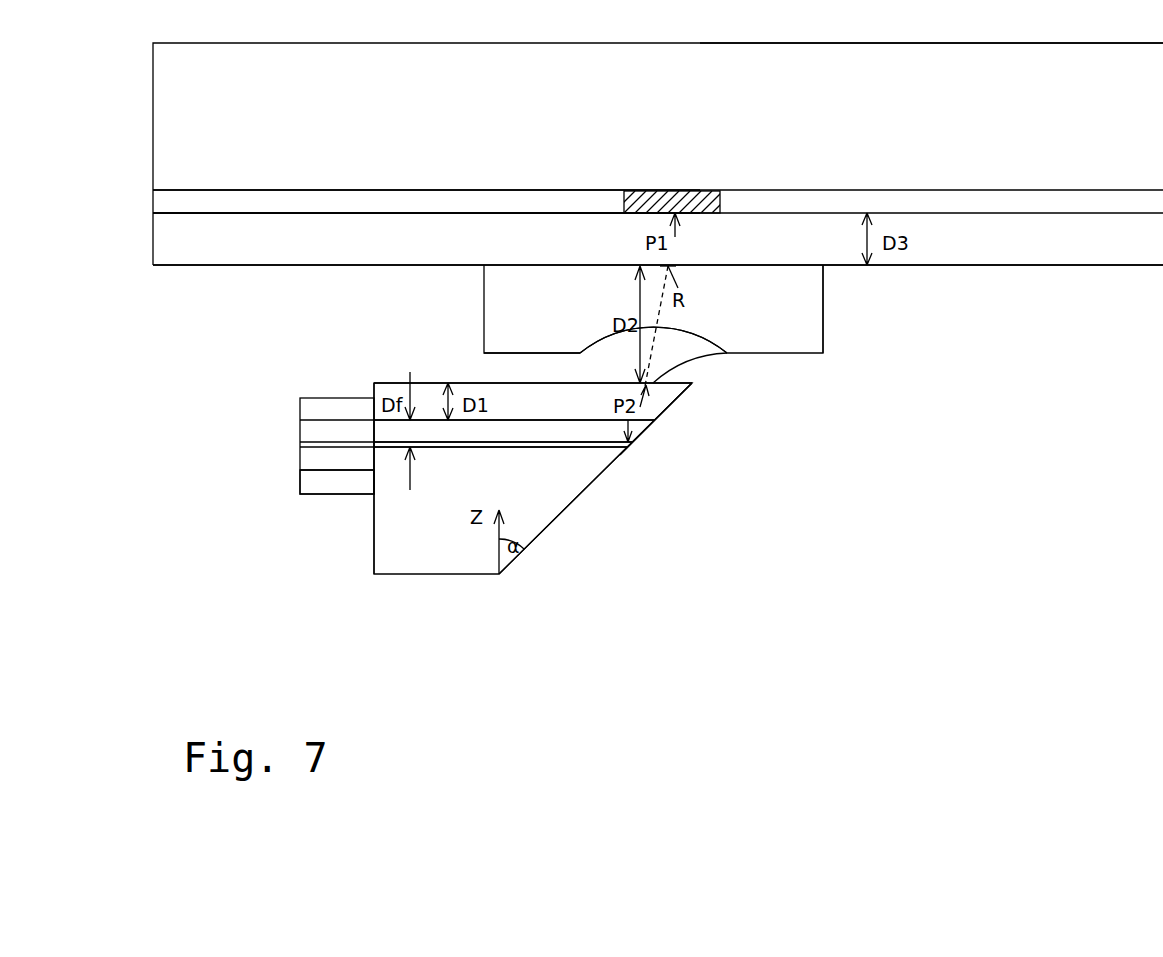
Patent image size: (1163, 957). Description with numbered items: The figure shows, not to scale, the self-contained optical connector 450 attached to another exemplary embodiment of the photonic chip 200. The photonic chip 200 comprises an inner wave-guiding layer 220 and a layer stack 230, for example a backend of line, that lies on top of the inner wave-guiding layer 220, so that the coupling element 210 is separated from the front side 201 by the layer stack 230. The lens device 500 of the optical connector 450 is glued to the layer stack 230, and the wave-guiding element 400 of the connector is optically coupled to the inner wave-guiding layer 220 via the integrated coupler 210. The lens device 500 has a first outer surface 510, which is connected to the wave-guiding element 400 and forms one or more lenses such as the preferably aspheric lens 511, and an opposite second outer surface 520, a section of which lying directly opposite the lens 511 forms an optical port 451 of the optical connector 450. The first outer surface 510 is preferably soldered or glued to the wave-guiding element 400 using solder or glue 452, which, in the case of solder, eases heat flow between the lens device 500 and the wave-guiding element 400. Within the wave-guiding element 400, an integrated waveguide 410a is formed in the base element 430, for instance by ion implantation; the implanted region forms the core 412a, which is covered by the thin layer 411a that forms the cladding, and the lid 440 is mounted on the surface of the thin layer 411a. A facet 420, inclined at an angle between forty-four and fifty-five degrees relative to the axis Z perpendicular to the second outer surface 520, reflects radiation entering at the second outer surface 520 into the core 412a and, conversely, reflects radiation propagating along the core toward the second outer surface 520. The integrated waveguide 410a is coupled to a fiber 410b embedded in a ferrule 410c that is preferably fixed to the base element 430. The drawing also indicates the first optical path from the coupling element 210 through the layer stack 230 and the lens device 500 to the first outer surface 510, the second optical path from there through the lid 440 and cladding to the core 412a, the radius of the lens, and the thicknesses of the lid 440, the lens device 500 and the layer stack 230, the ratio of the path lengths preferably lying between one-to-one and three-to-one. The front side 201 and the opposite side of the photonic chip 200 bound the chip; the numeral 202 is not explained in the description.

The photonic chip 200 is at (1110, 250).
The front side 201 is at (1023, 266).
The upper surface of display panel 202 is at (795, 43).
The coupling element 210 is at (705, 205).
The inner wave-guiding layer 220 is at (366, 205).
The layer stack 230 is at (256, 250).
The wave-guiding element 400 is at (433, 574).
The integrated waveguide 410a is at (545, 442).
The fiber 410b is at (308, 463).
The ferrule 410c is at (345, 487).
The thin layer 411a is at (552, 430).
The core 412a is at (513, 452).
The facet 420 is at (573, 502).
The base element 430 is at (380, 547).
The lid 440 is at (382, 383).
The optical connector 450 is at (672, 461).
The optical port 451 is at (668, 266).
The solder or glue 452 is at (492, 368).
The lens device 500 is at (820, 326).
The first outer surface 510 is at (772, 355).
The lens 511 is at (688, 378).
The second outer surface 520 is at (752, 266).